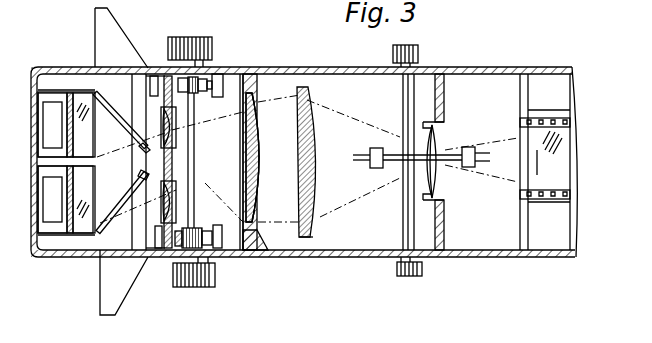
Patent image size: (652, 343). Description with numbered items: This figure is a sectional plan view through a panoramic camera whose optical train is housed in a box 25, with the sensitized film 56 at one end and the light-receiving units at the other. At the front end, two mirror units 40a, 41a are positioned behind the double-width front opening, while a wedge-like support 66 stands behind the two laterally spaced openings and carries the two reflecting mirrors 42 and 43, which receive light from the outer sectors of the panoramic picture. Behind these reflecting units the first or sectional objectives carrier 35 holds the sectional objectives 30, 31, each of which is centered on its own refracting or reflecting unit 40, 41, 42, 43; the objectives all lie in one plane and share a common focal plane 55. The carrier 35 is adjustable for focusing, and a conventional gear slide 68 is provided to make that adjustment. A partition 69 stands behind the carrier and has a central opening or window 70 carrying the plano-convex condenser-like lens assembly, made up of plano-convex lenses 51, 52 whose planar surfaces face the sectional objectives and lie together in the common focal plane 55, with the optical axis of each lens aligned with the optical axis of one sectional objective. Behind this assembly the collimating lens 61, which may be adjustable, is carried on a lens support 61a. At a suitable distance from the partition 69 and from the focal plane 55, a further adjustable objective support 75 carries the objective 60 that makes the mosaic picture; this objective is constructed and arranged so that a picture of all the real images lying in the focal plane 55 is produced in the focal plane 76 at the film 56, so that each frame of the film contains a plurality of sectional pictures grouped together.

The box 25 is at (313, 67).
The sectional objective 30 is at (172, 130).
The sectional objective 31 is at (177, 200).
The sectional objectives carrier 35 is at (247, 160).
The refracting or reflecting unit 40 is at (68, 96).
The mirror unit 40a is at (81, 97).
The refracting or reflecting unit 41 is at (70, 233).
The mirror unit 41a is at (80, 222).
The reflecting mirror 42 is at (116, 116).
The reflecting mirror 43 is at (115, 213).
The plano-convex lens 51 is at (257, 130).
The plano-convex lens 52 is at (258, 190).
The common focal plane 55 is at (247, 187).
The film 56 is at (565, 140).
The objective 60 is at (440, 147).
The collimating lens 61 is at (318, 160).
The lens support 61a is at (313, 235).
The wedge-like support 66 is at (146, 238).
The gear slide 68 is at (196, 246).
The partition 69 is at (262, 250).
The central opening or window 70 is at (255, 102).
The adjustable objective support 75 is at (413, 155).
The focal plane 76 is at (518, 182).